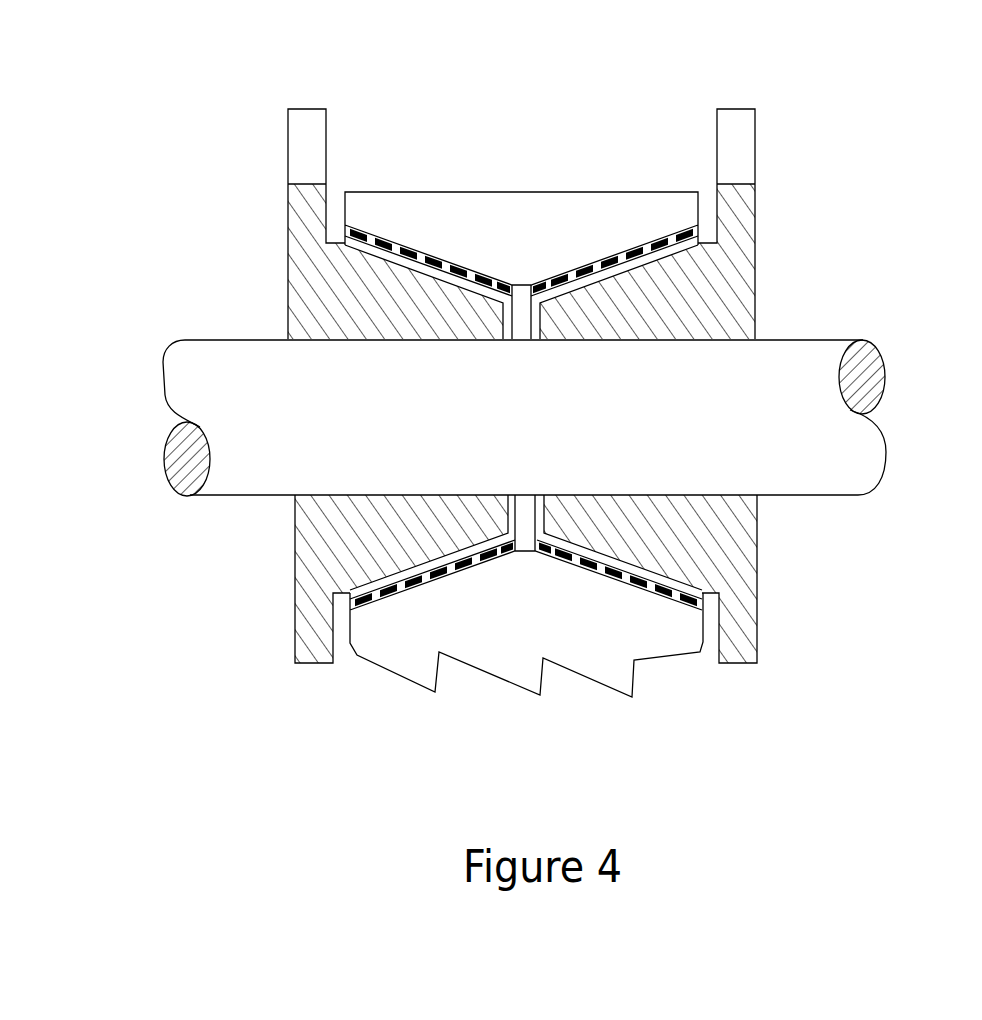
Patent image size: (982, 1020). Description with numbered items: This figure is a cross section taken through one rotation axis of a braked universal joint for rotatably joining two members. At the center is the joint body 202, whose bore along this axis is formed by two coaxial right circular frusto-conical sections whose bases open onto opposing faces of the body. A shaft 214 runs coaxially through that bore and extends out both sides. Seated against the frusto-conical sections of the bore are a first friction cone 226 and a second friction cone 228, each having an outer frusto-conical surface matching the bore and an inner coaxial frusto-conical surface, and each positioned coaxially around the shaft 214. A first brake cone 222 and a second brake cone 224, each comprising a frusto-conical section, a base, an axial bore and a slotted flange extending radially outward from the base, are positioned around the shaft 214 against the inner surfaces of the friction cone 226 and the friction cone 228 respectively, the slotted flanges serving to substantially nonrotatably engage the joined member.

The central joint body 202 is at (540, 233).
The shaft 214 is at (716, 398).
The first brake cone 222 is at (340, 284).
The second brake cone 224 is at (726, 273).
The first friction cone 226 is at (393, 248).
The second friction cone 228 is at (632, 243).